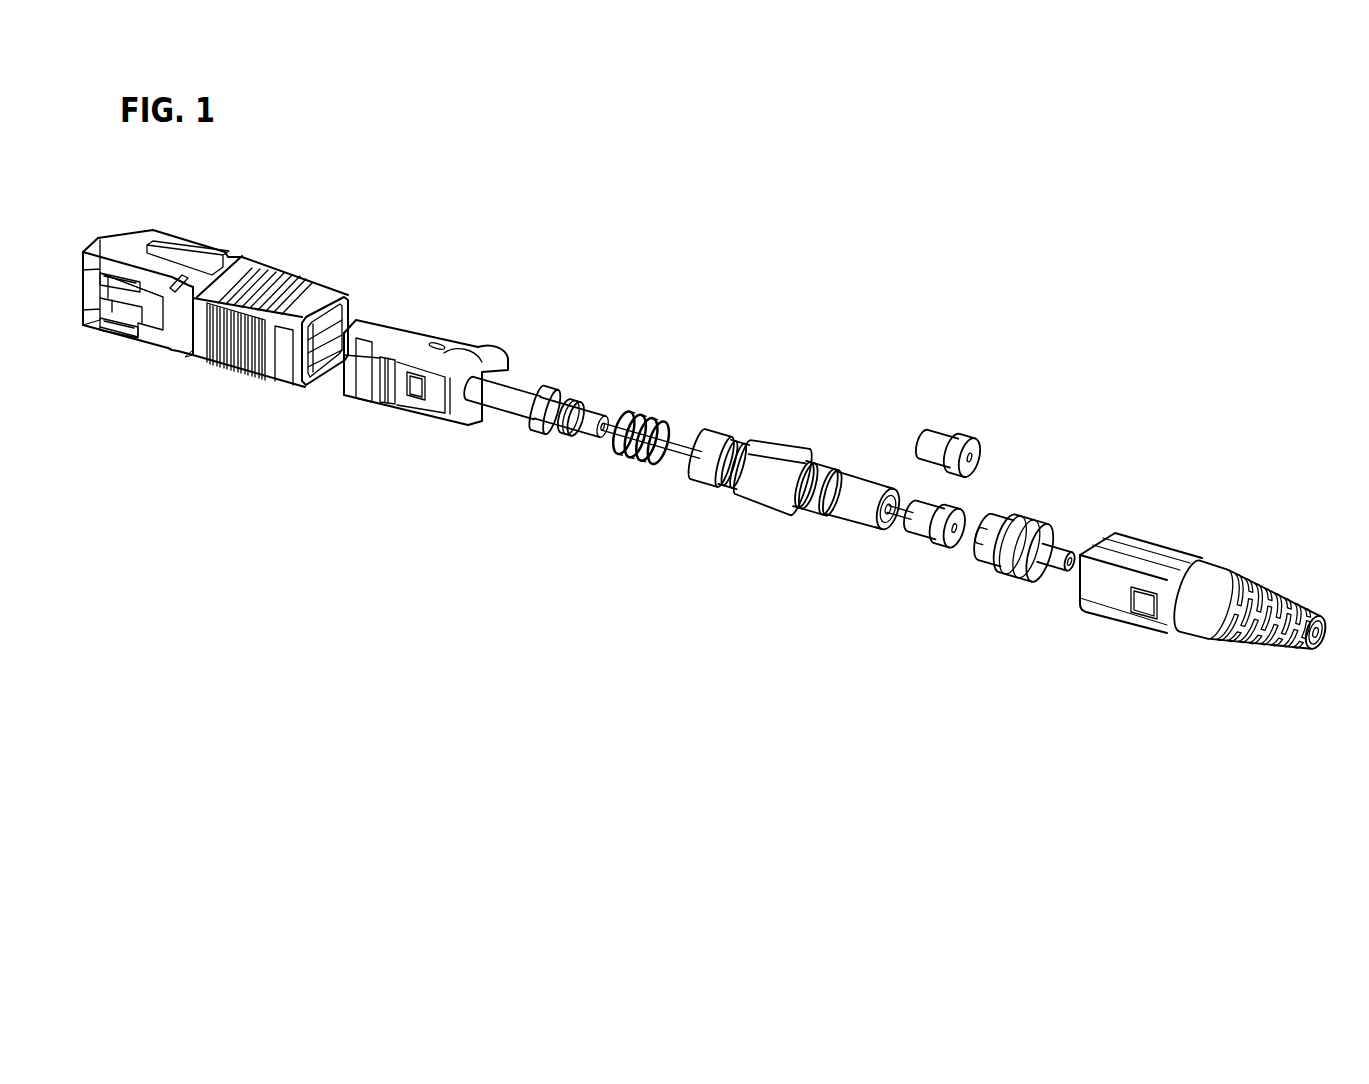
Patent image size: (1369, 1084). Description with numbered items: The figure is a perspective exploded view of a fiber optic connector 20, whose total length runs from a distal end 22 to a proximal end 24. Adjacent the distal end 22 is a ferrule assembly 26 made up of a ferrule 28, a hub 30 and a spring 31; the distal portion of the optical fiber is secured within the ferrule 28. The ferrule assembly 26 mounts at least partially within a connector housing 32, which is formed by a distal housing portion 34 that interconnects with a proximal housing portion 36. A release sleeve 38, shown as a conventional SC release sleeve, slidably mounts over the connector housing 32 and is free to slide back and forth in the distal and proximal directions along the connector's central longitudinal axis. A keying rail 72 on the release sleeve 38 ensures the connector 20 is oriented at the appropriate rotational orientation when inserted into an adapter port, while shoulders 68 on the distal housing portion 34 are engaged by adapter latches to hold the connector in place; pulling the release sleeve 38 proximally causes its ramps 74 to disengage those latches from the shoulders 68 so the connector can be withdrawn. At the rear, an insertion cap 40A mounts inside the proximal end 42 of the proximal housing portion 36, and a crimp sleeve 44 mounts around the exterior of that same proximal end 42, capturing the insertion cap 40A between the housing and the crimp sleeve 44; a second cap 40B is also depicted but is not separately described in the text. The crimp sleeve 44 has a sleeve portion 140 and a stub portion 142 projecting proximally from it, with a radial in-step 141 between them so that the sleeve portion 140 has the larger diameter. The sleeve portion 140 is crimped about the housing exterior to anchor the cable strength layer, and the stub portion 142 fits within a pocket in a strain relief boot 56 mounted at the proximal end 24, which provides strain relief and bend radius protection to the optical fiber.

The fiber optic connector 20 is at (566, 200).
The distal end 22 is at (79, 205).
The proximal end 24 is at (1321, 672).
The ferrule assembly 26 is at (630, 350).
The ferrule 28 is at (523, 378).
The hub 30 is at (543, 422).
The spring 31 is at (649, 457).
The connector housing 32 is at (463, 322).
The distal housing portion 34 is at (410, 413).
The proximal housing portion 36 is at (799, 441).
The release sleeve 38 is at (208, 247).
The insertion cap 40A is at (943, 537).
The end cap 40B is at (952, 440).
The proximal end of the proximal housing portion 42 is at (892, 487).
The crimp sleeve 44 is at (1034, 513).
The strain relief boot 56 is at (1187, 553).
The shoulders 68 is at (377, 386).
The keying rail 72 is at (158, 247).
The ramps 74 is at (103, 276).
The sleeve portion 140 is at (992, 561).
The radial in-step 141 is at (1031, 572).
The stub portion 142 is at (1062, 552).